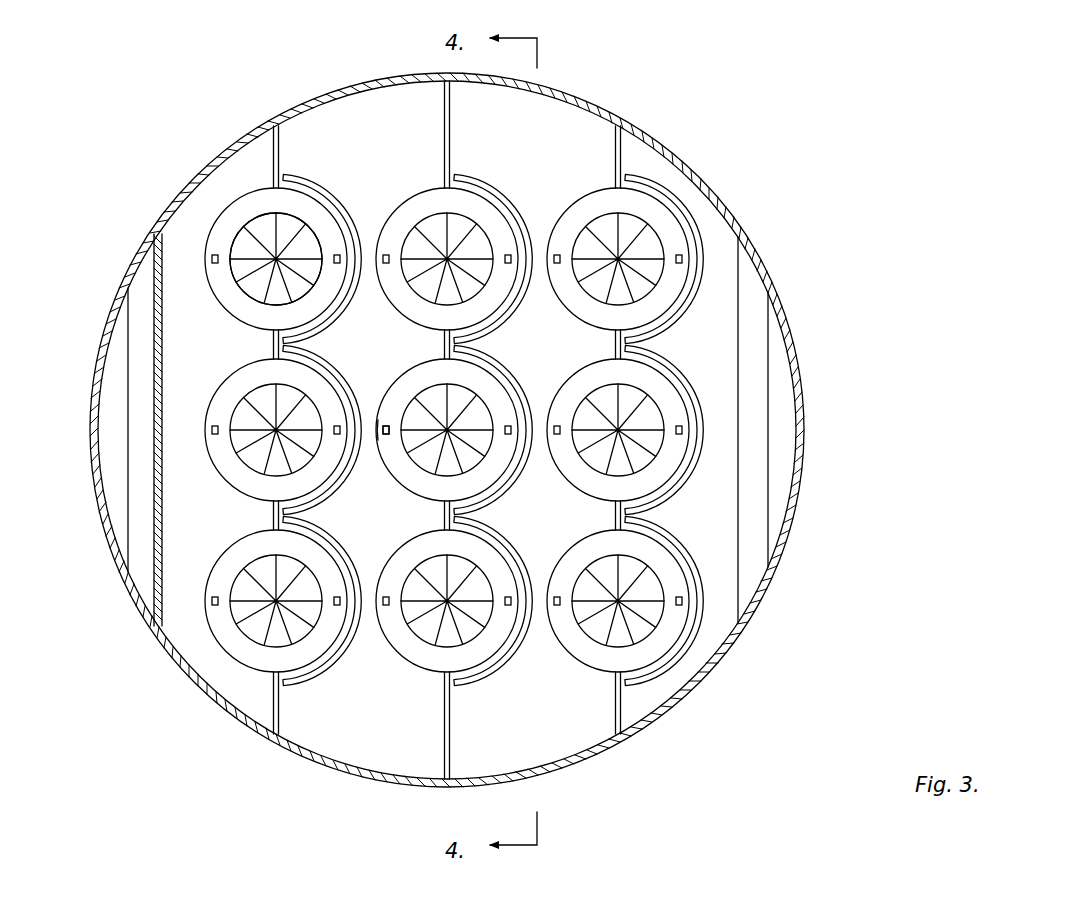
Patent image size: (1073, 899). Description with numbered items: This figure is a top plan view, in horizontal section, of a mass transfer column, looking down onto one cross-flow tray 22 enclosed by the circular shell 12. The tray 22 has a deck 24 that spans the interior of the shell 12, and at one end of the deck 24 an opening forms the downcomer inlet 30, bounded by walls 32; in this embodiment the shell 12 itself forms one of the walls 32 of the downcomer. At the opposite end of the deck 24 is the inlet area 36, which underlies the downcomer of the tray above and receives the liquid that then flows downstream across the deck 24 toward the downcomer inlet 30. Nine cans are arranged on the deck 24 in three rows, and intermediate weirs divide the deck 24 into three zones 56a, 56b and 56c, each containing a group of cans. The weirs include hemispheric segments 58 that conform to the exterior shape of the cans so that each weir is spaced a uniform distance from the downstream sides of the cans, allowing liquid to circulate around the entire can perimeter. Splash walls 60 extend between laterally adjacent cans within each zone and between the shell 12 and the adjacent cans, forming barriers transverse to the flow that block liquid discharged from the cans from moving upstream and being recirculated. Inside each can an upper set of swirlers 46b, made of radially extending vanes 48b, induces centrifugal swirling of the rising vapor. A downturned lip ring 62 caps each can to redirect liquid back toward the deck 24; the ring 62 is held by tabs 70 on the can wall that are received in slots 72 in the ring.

The shell 12 is at (716, 198).
The cross-flow tray 22 is at (575, 138).
The deck 24 is at (605, 125).
The downcomer inlet 30 is at (784, 420).
The wall 32 is at (143, 292).
The inlet area 36 is at (110, 396).
The upper set of swirlers 46b is at (263, 213).
The upper vanes 48b is at (243, 241).
The first zone 56a is at (282, 143).
The second zone 56b is at (458, 100).
The third zone 56c is at (630, 151).
The hemispheric segment 58 is at (323, 197).
The splash wall 60 is at (470, 408).
The downturned lip ring 62 is at (430, 193).
The tab 70 is at (378, 440).
The slot 72 is at (388, 438).